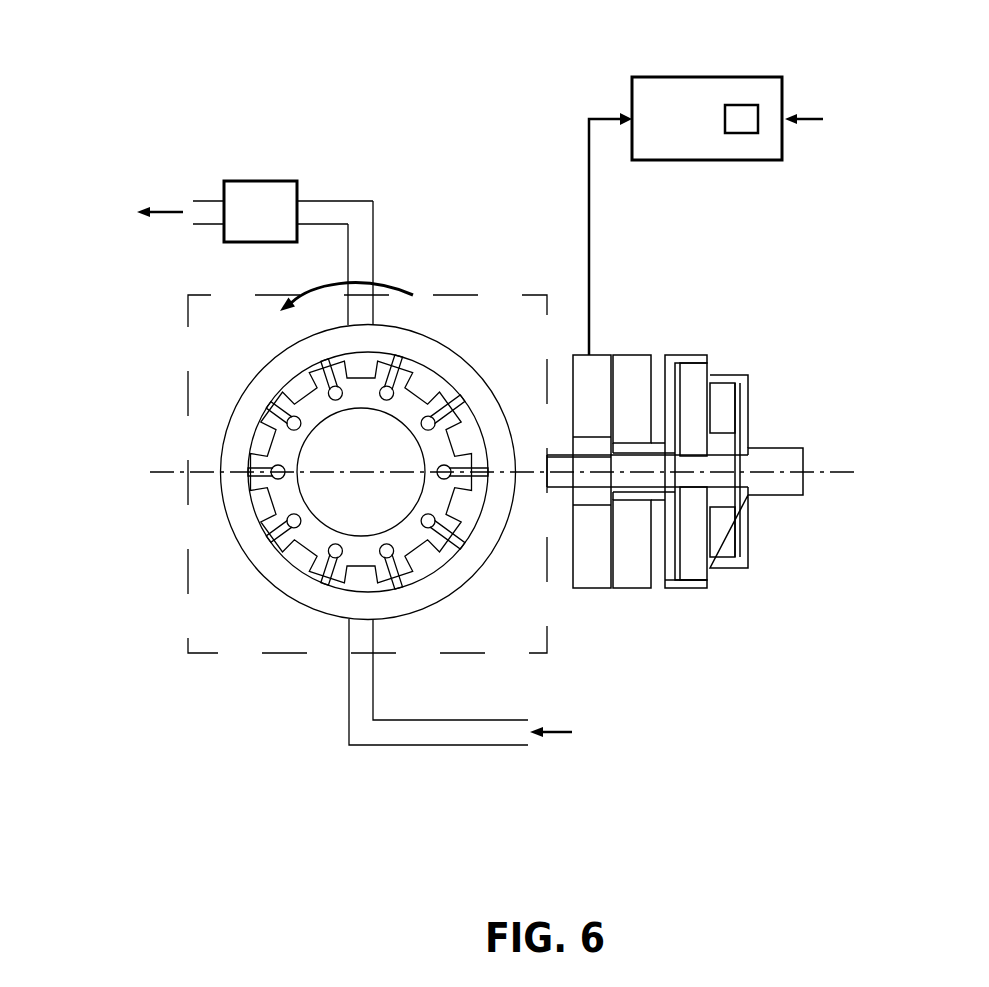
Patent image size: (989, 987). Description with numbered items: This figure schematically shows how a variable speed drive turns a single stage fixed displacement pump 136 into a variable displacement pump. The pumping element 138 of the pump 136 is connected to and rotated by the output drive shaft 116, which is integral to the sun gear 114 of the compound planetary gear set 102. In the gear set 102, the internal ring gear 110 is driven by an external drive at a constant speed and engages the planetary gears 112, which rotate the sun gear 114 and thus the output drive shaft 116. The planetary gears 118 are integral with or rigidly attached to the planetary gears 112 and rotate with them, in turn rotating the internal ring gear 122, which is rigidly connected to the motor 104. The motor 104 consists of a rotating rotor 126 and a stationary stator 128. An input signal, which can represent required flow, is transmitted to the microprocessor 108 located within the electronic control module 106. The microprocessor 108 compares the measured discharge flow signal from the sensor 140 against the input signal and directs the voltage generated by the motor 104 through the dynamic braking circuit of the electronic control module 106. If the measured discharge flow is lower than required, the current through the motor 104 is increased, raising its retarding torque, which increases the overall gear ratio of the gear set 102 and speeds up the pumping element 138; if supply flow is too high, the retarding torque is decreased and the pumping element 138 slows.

The compound planetary gear set 102 is at (775, 397).
The motor 104 is at (613, 320).
The electronic control module 106 is at (632, 92).
The microprocessor 108 is at (742, 105).
The internal ring gear 110 is at (800, 478).
The planetary gears 112 is at (730, 383).
The sun gear 114 is at (720, 512).
The output drive shaft 116 is at (584, 455).
The planetary gears 118 is at (693, 355).
The internal ring gear 122 is at (695, 588).
The rotor 126 is at (638, 355).
The stator 128 is at (595, 588).
The single stage fixed displacement pump 136 is at (282, 665).
The pumping element 138 is at (277, 498).
The sensor 140 is at (259, 181).